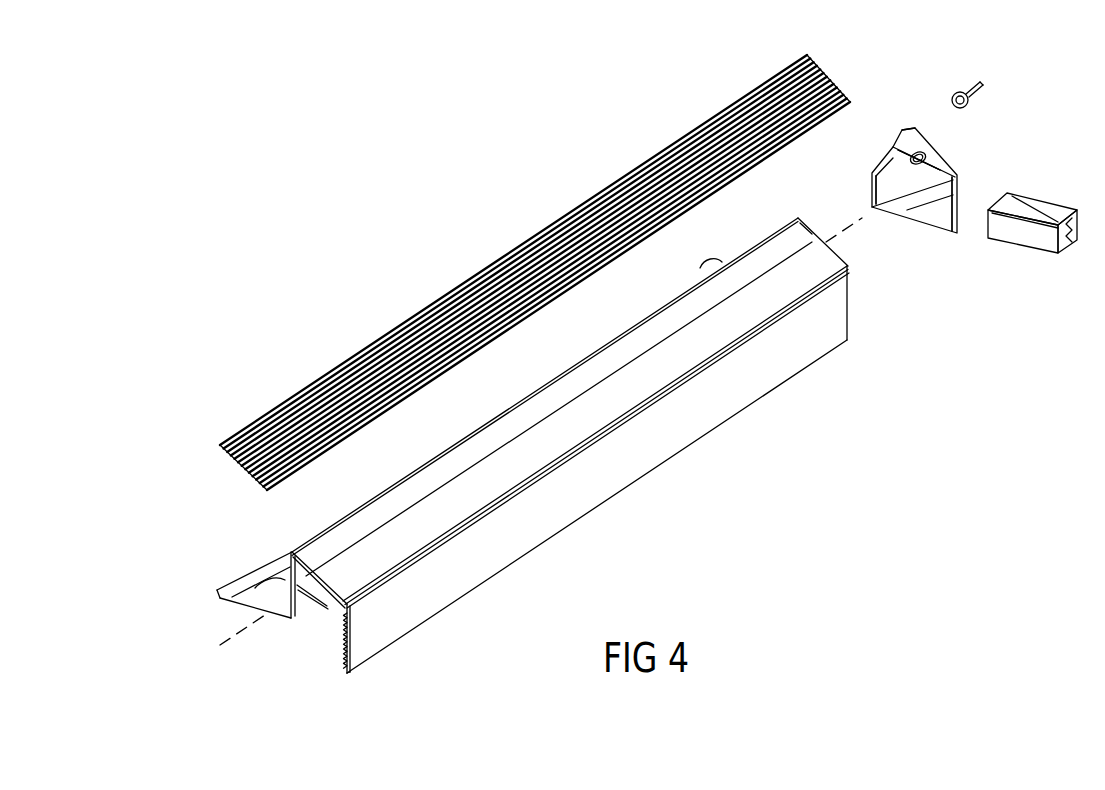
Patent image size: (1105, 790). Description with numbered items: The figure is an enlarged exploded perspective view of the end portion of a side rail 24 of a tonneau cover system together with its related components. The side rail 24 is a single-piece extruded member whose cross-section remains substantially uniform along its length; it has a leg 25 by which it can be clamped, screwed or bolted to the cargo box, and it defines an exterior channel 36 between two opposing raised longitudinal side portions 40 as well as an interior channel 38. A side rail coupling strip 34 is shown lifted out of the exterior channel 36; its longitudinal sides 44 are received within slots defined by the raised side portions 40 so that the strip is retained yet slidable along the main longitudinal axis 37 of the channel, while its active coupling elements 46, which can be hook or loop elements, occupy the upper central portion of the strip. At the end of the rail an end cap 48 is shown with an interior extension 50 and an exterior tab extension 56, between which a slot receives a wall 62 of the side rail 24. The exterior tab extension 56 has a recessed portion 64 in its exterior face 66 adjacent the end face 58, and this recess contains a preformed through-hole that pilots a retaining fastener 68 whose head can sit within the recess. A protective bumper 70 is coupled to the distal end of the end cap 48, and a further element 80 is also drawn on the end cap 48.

The side rail 24 is at (664, 484).
The leg 25 is at (346, 668).
The side rail coupling strip 34 is at (450, 262).
The exterior channel 36 is at (326, 556).
The main longitudinal axis 37 is at (868, 233).
The interior channel 38 is at (326, 610).
The raised longitudinal side portions 40 is at (798, 219).
The longitudinal sides 44 is at (280, 420).
The active coupling elements 46 is at (424, 318).
The end cap 48 is at (958, 155).
The interior extension 50 is at (886, 164).
The exterior tab extension 56 is at (912, 132).
The end face 58 is at (876, 191).
The wall 62 is at (314, 618).
The recessed portion 64 is at (924, 152).
The exterior face 66 is at (940, 172).
The retaining fastener 68 is at (970, 88).
The protective bumper 70 is at (1020, 205).
The side face of bracket 80 is at (960, 207).